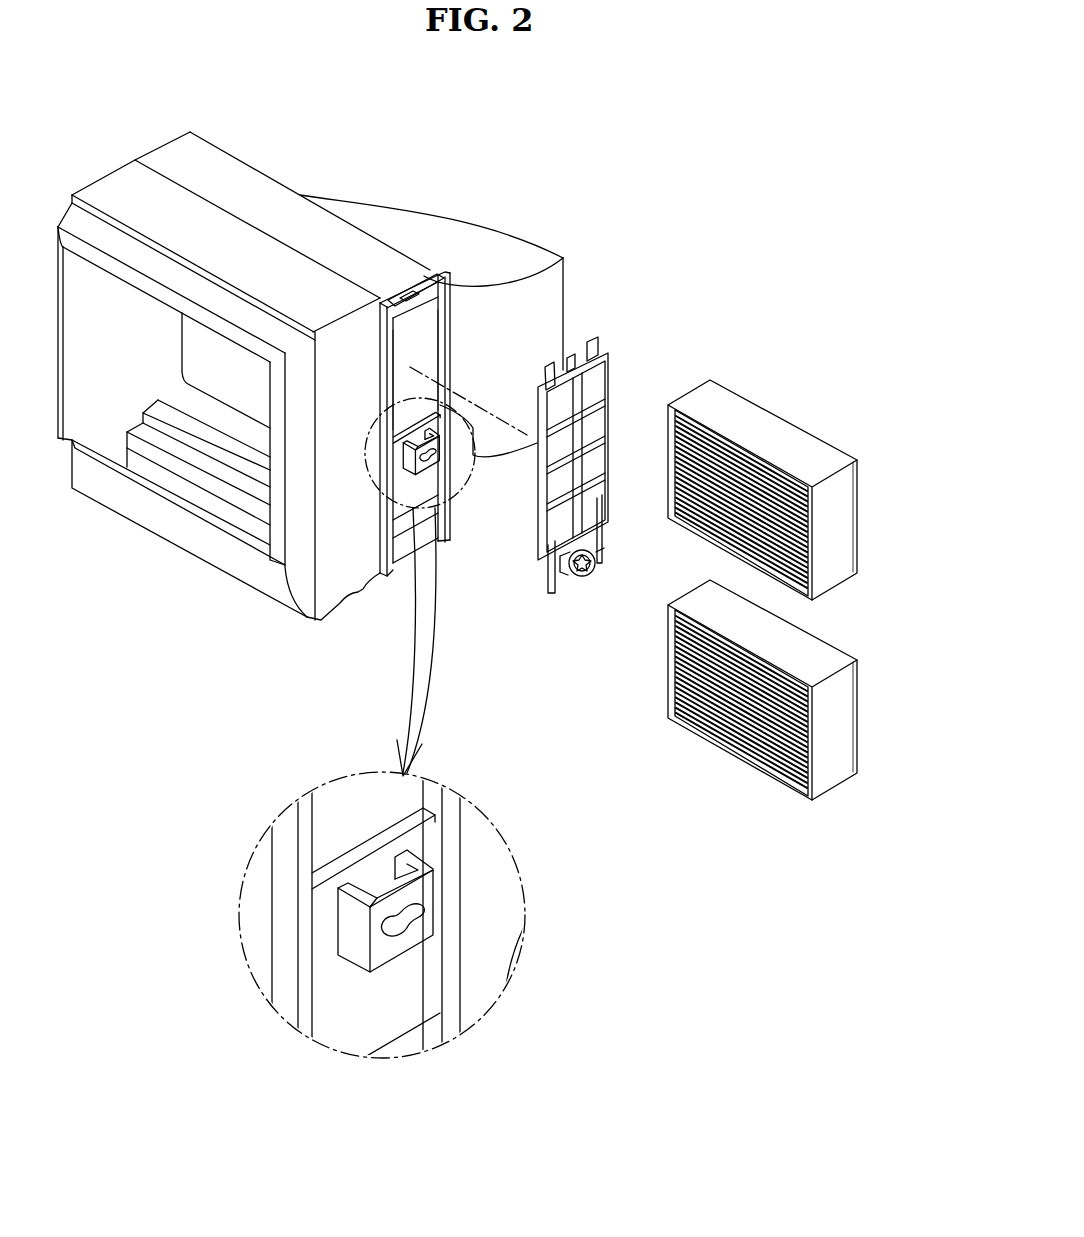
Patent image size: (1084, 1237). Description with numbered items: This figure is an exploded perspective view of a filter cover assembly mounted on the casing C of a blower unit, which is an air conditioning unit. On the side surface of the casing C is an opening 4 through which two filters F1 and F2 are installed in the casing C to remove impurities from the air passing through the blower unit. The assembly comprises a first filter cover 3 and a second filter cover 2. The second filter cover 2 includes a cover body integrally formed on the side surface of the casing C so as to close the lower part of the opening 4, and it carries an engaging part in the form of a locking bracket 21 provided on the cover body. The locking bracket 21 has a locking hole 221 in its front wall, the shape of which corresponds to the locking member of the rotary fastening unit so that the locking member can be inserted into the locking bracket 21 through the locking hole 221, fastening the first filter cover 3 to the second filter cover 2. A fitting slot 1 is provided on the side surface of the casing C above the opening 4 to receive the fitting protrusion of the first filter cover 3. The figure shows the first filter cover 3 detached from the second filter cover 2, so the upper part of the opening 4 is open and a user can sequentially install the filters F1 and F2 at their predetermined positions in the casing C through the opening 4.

The casing C is at (304, 150).
The fitting slot 1 is at (424, 282).
The opening 4 is at (415, 353).
The first filter cover 3 is at (628, 397).
The filter F1 is at (787, 443).
The filter F2 is at (832, 722).
The second filter cover 2 is at (238, 1003).
The locking bracket 21 is at (432, 861).
The locking hole 221 is at (418, 913).